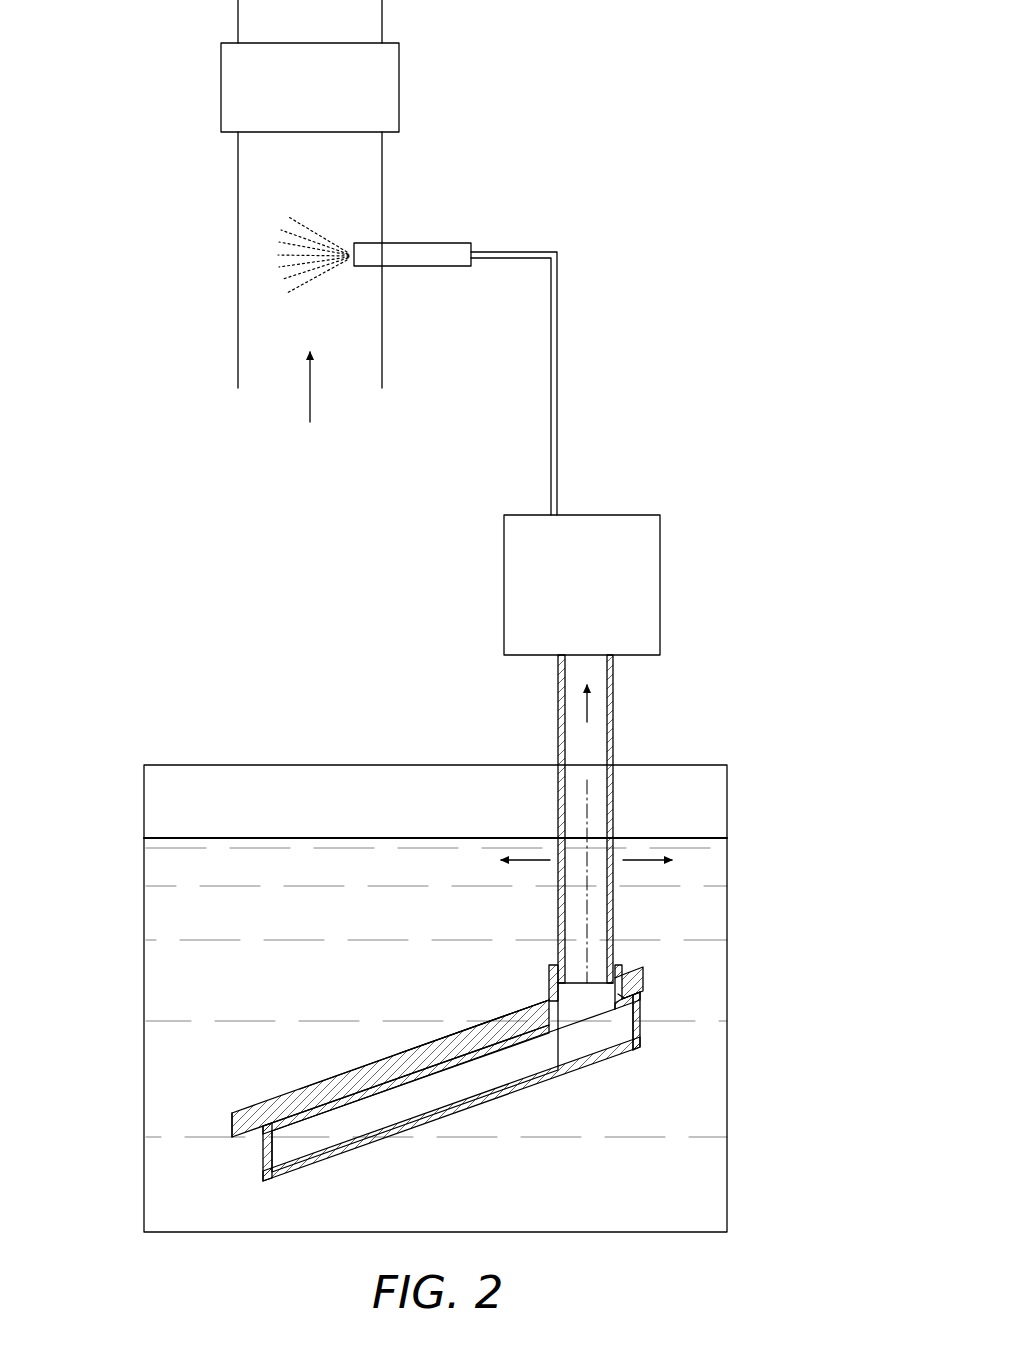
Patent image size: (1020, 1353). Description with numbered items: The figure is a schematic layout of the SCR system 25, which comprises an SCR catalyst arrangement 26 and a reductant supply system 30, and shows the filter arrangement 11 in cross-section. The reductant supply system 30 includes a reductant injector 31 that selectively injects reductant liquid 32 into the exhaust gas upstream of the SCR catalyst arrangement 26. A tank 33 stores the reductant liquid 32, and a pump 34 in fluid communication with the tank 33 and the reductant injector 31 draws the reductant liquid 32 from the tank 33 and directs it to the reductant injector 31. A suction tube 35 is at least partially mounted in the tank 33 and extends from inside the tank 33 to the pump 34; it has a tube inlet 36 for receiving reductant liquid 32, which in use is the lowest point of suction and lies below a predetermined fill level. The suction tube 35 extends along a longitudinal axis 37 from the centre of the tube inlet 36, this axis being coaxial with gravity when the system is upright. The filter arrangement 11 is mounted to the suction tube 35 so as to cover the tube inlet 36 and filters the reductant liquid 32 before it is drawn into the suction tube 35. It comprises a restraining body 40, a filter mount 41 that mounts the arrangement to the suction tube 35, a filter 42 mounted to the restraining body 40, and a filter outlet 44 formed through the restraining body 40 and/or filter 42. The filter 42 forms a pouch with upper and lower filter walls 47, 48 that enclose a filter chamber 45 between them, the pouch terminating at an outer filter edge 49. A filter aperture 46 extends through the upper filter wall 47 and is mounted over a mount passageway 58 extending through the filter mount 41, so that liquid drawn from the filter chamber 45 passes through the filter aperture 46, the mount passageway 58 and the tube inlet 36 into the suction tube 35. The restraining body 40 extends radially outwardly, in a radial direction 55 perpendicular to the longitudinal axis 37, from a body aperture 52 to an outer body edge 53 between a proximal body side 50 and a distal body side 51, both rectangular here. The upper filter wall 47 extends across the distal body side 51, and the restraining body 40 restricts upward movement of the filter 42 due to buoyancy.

The filter arrangement 11 is at (236, 1092).
The SCR system 25 is at (136, 530).
The SCR catalyst arrangement 26 is at (310, 87).
The reductant supply system 30 is at (736, 530).
The reductant injector 31 is at (444, 243).
The reductant liquid 32 is at (325, 283).
The tank 33 is at (727, 775).
The pump 34 is at (582, 585).
The suction tube 35 is at (614, 705).
The tube inlet 36 is at (597, 983).
The longitudinal axis 37 is at (590, 785).
The restraining body 40 is at (370, 1078).
The filter mount 41 is at (548, 972).
The filter 42 is at (640, 1050).
The filter outlet 44 is at (598, 1000).
The filter chamber 45 is at (488, 1078).
The filter aperture 46 is at (570, 1030).
The upper filter wall 47 is at (310, 1112).
The lower filter wall 48 is at (337, 1165).
The outer filter edge 49 is at (262, 1155).
The proximal body side 50 is at (422, 1046).
The distal body side 51 is at (477, 1045).
The body aperture 52 is at (624, 996).
The outer body edge 53 is at (644, 970).
The radial direction 55 is at (520, 860).
The mount passageway 58 is at (632, 1012).